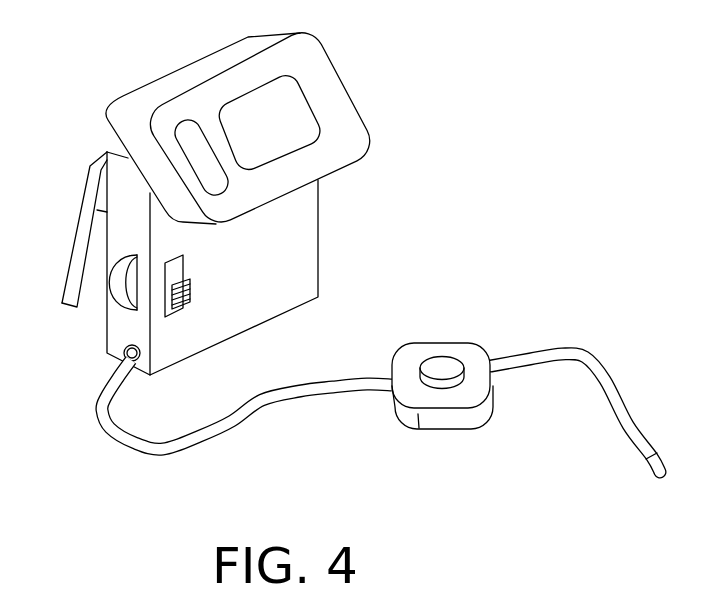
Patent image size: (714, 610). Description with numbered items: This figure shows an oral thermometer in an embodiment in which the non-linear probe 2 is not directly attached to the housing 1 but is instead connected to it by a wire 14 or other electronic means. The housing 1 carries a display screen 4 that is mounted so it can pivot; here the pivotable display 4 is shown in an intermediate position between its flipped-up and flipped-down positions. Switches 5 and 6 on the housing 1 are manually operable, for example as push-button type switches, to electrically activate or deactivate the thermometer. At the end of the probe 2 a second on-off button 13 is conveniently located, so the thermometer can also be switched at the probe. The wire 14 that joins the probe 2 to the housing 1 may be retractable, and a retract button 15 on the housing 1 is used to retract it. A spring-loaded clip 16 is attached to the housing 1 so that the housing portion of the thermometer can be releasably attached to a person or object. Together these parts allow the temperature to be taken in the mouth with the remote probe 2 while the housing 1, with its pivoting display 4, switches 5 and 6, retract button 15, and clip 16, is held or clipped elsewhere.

The housing 1 is at (290, 255).
The probe 2 is at (603, 357).
The display screen 4 is at (290, 108).
The switch 5 is at (188, 130).
The switch 6 is at (193, 288).
The second on-off button 13 is at (453, 383).
The wire 14 is at (233, 427).
The retract button 15 is at (112, 295).
The spring-loaded clip 16 is at (82, 237).